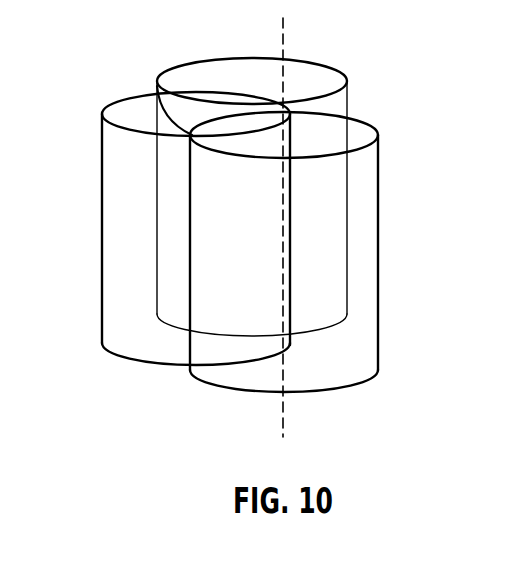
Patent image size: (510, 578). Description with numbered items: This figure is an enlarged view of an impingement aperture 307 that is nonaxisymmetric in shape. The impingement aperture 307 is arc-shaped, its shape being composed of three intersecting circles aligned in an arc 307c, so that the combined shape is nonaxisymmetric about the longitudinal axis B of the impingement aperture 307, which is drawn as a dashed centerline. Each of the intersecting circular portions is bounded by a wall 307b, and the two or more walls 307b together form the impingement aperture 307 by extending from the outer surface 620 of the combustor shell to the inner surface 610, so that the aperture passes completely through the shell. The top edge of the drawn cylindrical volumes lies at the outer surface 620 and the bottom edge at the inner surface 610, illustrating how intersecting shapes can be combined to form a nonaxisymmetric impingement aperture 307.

The impingement aperture 307 is at (257, 239).
The wall 307b is at (326, 255).
The arc 307c is at (253, 82).
The inner surface 610 is at (322, 388).
The outer surface 620 is at (360, 122).
The longitudinal axis B is at (284, 42).